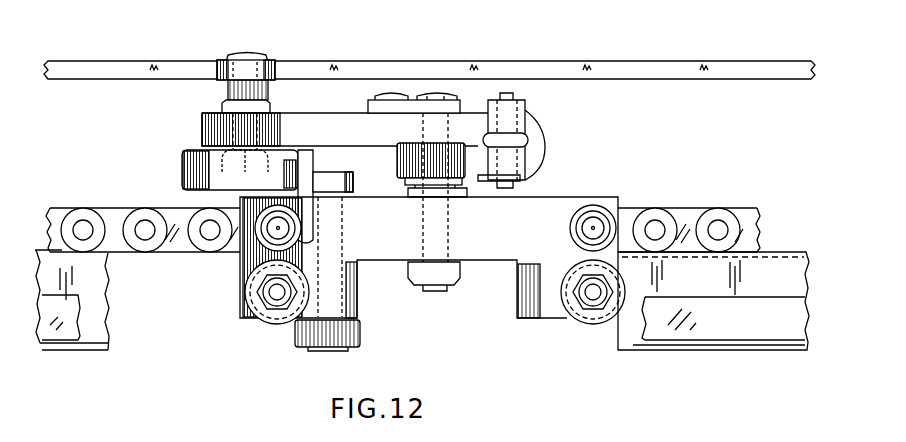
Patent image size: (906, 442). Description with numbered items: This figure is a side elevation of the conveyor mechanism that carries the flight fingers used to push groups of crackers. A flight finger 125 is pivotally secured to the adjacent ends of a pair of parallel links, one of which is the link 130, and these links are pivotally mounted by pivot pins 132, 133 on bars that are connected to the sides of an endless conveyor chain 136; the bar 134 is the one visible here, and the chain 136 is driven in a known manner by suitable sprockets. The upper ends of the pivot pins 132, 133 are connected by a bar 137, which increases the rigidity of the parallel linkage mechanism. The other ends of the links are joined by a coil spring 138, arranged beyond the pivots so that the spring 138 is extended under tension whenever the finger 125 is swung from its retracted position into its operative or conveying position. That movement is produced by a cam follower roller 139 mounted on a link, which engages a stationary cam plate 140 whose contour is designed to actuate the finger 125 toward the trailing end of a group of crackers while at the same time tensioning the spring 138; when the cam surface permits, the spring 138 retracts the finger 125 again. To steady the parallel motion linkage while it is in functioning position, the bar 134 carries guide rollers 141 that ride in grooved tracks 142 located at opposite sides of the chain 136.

The flight finger 125 is at (197, 170).
The parallel link 130 is at (358, 135).
The pivot pin 132 is at (450, 232).
The pivot pin 133 is at (390, 88).
The bar 134 is at (502, 252).
The endless conveyor chain 136 is at (85, 210).
The bar 137 is at (437, 105).
The coil spring 138 is at (538, 135).
The cam follower roller 139 is at (293, 43).
The stationary cam plate 140 is at (401, 65).
The guide roller 141 is at (263, 320).
The grooved track 142 is at (722, 328).